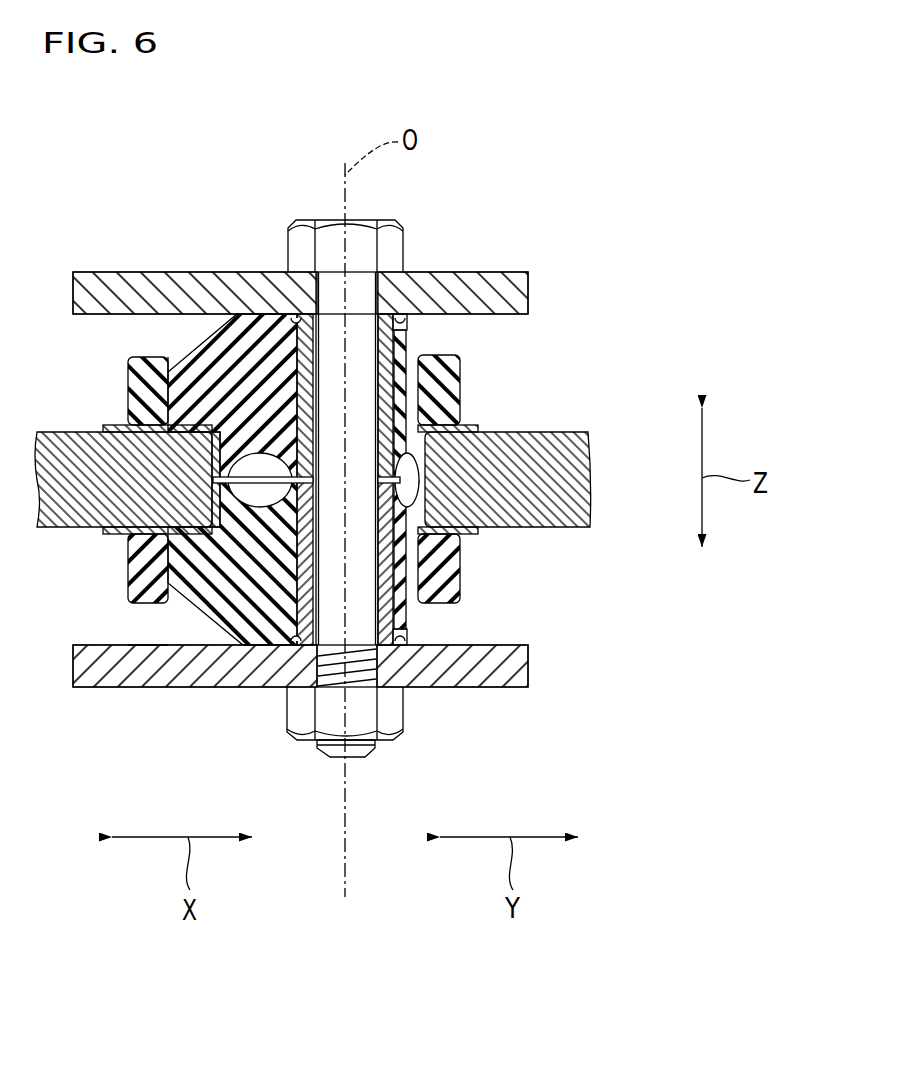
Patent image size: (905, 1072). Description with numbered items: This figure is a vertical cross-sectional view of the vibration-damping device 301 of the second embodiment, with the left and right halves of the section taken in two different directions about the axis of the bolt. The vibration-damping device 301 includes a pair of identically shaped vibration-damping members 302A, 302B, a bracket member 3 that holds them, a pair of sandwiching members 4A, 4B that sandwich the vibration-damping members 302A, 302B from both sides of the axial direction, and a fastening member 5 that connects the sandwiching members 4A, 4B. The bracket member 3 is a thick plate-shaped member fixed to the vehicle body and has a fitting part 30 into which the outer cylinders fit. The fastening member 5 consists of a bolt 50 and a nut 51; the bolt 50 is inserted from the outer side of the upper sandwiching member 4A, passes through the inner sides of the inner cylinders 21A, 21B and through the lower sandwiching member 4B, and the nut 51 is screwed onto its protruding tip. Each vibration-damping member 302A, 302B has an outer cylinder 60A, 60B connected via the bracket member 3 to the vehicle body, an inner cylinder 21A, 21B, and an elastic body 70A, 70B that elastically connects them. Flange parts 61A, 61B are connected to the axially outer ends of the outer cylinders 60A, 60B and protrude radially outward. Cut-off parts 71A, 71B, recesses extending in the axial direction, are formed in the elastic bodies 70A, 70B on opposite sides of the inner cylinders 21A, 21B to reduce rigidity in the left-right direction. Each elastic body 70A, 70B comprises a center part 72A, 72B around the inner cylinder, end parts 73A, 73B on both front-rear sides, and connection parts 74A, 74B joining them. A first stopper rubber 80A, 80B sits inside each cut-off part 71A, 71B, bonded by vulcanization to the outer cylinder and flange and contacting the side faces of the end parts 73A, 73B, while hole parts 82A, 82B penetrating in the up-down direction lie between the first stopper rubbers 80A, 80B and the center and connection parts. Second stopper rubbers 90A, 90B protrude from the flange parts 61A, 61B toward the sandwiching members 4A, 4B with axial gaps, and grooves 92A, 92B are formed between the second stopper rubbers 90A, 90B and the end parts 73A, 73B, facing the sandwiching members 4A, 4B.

The vibration-damping device 301 is at (512, 183).
The vibration-damping member 302A is at (615, 365).
The vibration-damping member 302B is at (622, 592).
The bracket member 3 is at (572, 447).
The sandwiching member 4A is at (528, 280).
The sandwiching member 4B is at (528, 663).
The fastening member 5 is at (371, 768).
The bolt 50 is at (332, 232).
The nut 51 is at (332, 723).
The inner cylinder 21A is at (302, 350).
The inner cylinder 21B is at (300, 588).
The fitting part 30 is at (422, 484).
The outer cylinder 60A is at (422, 466).
The outer cylinder 60B is at (423, 496).
The flange part 61A is at (478, 428).
The flange part 61B is at (475, 530).
The elastic body 70A is at (177, 346).
The elastic body 70B is at (189, 609).
The cut-off part 71A is at (428, 348).
The cut-off part 71B is at (429, 615).
The center part 72A is at (412, 368).
The center part 72B is at (413, 600).
The end part 73A is at (217, 370).
The end part 73B is at (197, 568).
The connection part 74A is at (285, 370).
The connection part 74B is at (278, 562).
The first stopper rubber 80A is at (440, 375).
The first stopper rubber 80B is at (447, 580).
The hole part 82A is at (404, 345).
The hole part 82B is at (401, 609).
The second stopper rubber 90A is at (137, 400).
The second stopper rubber 90B is at (138, 565).
The groove 92A is at (169, 357).
The groove 92B is at (137, 645).